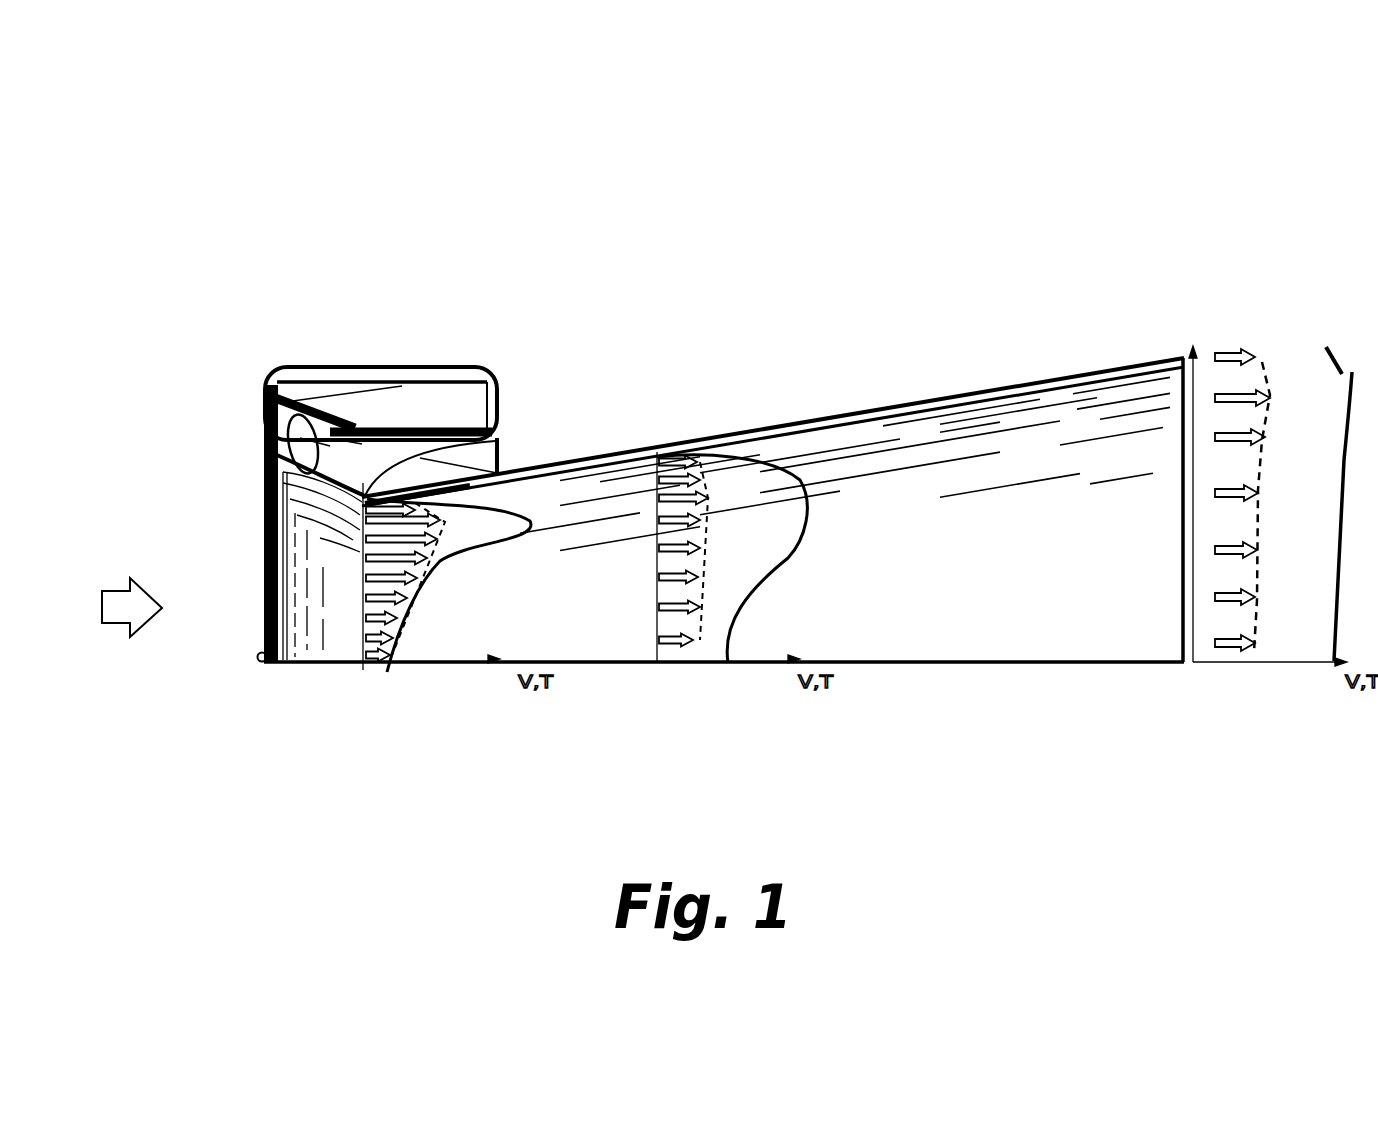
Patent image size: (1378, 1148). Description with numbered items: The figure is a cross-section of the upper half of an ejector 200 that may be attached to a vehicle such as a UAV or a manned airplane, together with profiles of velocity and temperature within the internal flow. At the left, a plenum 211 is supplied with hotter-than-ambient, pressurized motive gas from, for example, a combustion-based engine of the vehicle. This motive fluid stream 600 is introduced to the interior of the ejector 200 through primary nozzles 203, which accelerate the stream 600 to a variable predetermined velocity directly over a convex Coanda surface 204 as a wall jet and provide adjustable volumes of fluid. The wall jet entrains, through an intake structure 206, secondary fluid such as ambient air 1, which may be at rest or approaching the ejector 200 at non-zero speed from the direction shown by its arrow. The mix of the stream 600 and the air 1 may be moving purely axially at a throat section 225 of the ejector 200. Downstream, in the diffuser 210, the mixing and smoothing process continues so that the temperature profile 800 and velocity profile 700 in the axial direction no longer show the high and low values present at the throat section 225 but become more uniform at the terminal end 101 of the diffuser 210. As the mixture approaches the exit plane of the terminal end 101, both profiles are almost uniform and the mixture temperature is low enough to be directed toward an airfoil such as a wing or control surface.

The ambient air 1 is at (118, 583).
The terminal end 101 is at (1182, 672).
The ejector 200 is at (345, 382).
The primary nozzles 203 is at (266, 438).
The convex Coanda surface 204 is at (290, 412).
The intake structure 206 is at (266, 408).
The diffuser 210 is at (500, 471).
The plenum 211 is at (455, 415).
The throat section 225 is at (365, 494).
The motive fluid stream 600 is at (300, 398).
The velocity profile 700 is at (407, 640).
The temperature profile 800 is at (532, 520).